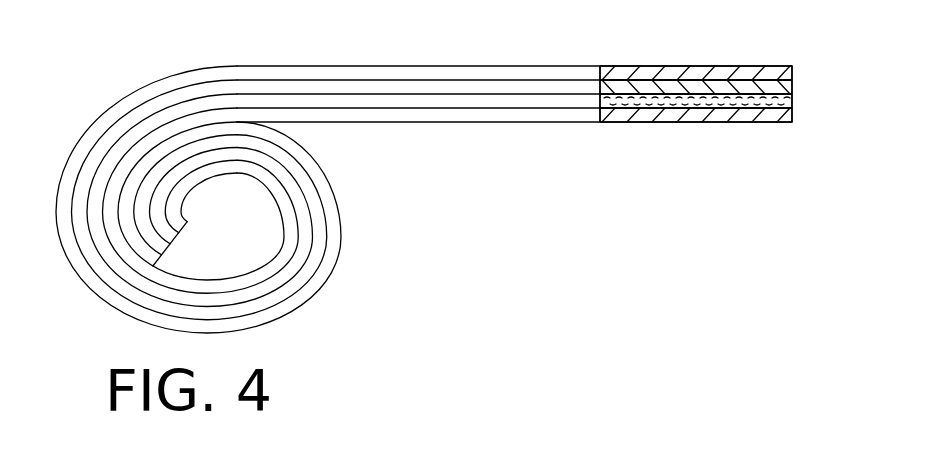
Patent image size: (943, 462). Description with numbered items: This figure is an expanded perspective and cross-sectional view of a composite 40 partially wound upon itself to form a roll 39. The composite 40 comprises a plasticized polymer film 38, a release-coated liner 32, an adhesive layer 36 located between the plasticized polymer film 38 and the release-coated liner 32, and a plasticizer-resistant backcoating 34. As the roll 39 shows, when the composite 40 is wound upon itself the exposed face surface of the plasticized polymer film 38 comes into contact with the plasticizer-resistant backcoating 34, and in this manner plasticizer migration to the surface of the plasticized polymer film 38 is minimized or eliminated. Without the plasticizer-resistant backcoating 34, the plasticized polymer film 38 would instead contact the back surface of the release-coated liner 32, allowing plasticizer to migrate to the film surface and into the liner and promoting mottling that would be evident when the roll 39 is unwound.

The release-coated liner 32 is at (793, 104).
The plasticizer-resistant backcoating 34 is at (793, 115).
The adhesive layer 36 is at (793, 89).
The plasticized polymer film 38 is at (793, 73).
The roll 39 is at (345, 229).
The composite 40 is at (484, 123).